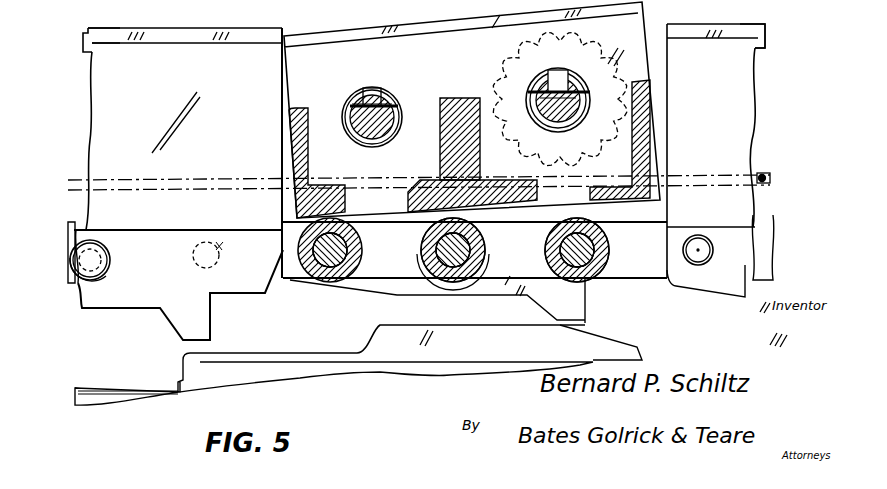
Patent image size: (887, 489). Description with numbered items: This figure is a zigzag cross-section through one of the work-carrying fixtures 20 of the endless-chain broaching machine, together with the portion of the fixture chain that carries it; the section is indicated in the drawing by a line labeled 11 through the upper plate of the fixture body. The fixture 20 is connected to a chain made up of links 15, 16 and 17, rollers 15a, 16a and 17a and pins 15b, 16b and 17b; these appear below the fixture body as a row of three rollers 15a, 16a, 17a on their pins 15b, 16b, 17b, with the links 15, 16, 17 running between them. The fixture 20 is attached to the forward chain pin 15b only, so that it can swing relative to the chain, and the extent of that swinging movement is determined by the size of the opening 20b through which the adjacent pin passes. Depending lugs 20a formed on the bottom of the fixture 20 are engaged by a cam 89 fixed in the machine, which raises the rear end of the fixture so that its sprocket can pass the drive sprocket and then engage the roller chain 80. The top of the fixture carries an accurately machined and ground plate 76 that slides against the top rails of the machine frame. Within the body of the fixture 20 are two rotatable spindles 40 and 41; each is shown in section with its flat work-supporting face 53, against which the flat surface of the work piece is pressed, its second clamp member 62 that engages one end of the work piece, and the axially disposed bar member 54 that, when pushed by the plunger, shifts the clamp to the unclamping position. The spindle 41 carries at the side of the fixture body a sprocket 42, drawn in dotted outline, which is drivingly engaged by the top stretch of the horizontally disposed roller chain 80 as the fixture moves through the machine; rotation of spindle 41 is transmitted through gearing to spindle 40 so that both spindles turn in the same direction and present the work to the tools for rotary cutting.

The inclined supporting plate 11 is at (515, 6).
The link 15 is at (78, 290).
The roller 15a is at (362, 244).
The pin 15b is at (340, 262).
The link 16 is at (542, 229).
The roller 16a is at (482, 243).
The pin 16b is at (462, 262).
The link 17 is at (643, 226).
The roller 17a is at (607, 238).
The pin 17b is at (615, 263).
The fixture 20 is at (166, 45).
The depending lug 20a is at (195, 318).
The opening 20b is at (440, 283).
The spindle 40 is at (368, 144).
The spindle 41 is at (543, 130).
The sprocket 42 is at (611, 62).
The flat surface 53 is at (545, 98).
The bar member 54 is at (570, 110).
The clamp member 62 is at (557, 82).
The plate 76 is at (104, 32).
The roller chain 80 is at (763, 174).
The cam 89 is at (487, 336).